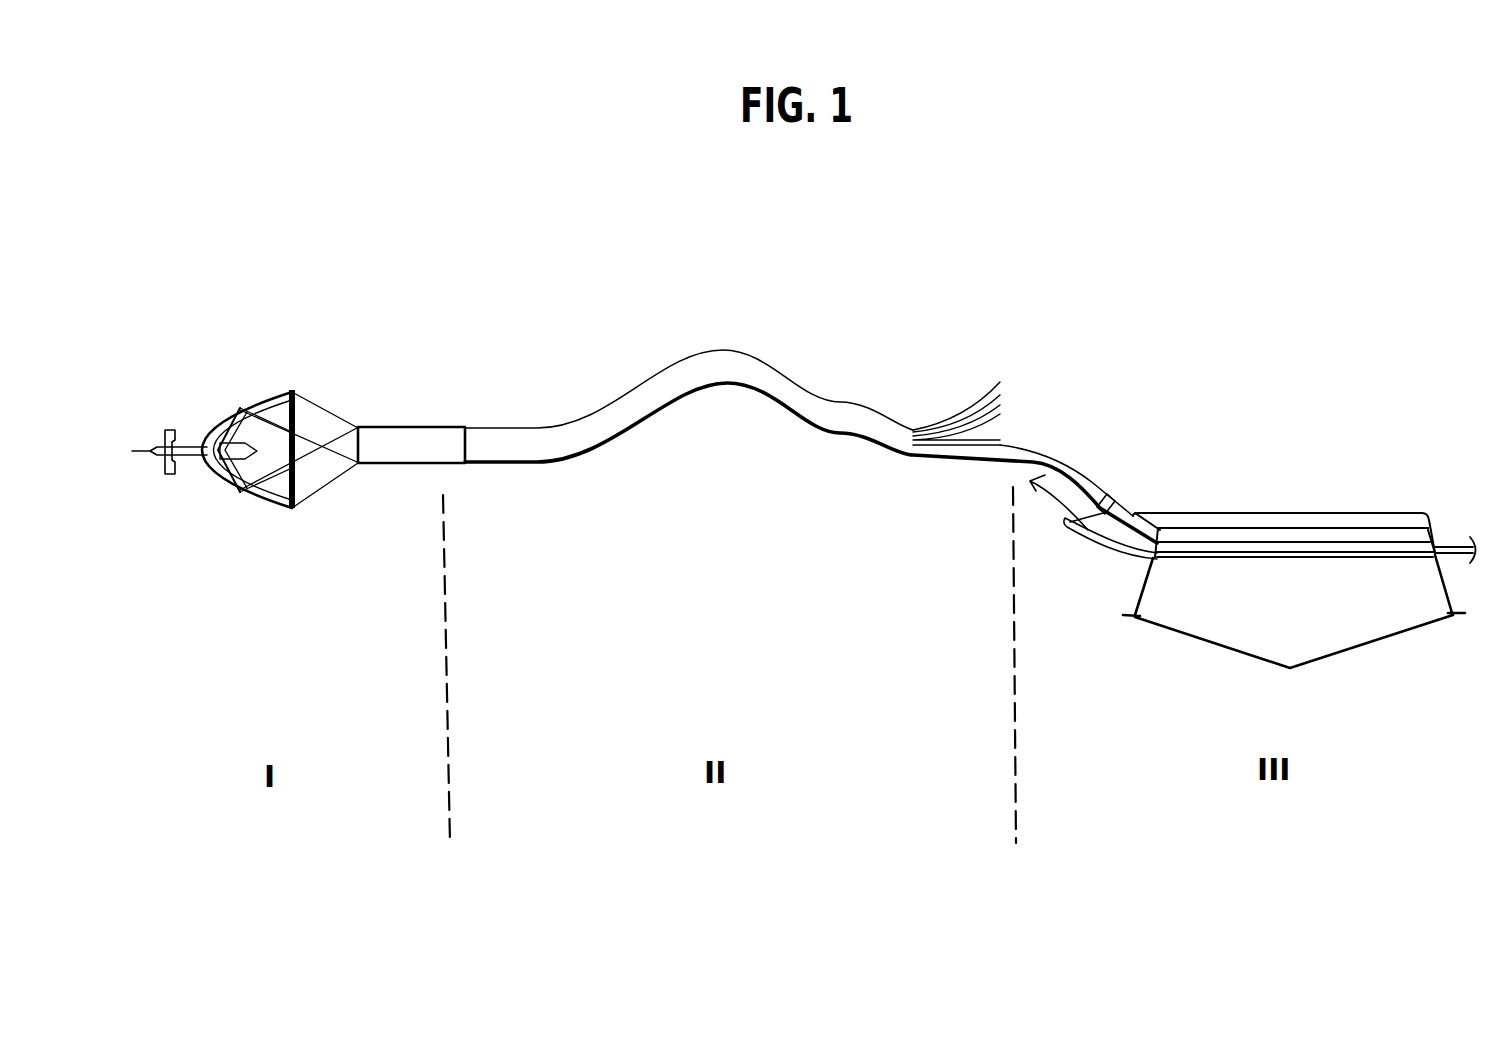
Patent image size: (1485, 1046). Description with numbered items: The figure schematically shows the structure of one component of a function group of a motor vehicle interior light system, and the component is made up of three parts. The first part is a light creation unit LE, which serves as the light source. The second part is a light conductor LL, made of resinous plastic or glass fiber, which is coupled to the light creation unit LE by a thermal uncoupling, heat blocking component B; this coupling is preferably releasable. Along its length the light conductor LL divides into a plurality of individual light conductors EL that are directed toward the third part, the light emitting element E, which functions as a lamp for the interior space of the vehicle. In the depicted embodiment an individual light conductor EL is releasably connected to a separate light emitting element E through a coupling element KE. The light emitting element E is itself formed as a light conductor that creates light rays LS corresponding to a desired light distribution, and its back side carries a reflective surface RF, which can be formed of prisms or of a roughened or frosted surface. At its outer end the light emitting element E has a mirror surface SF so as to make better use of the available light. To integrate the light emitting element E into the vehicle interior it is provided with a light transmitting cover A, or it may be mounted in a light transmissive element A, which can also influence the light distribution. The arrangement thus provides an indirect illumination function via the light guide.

The light creation unit LE is at (221, 418).
The thermal uncoupling component B is at (413, 443).
The light conductor LL is at (718, 370).
The individual light conductors EL is at (948, 440).
The coupling element KE is at (1103, 500).
The light transmitting cover A is at (1107, 550).
The light emitting element E is at (1333, 533).
The reflective surface RF is at (1253, 527).
The mirror surface SF is at (1440, 523).
The light rays LS is at (1220, 647).